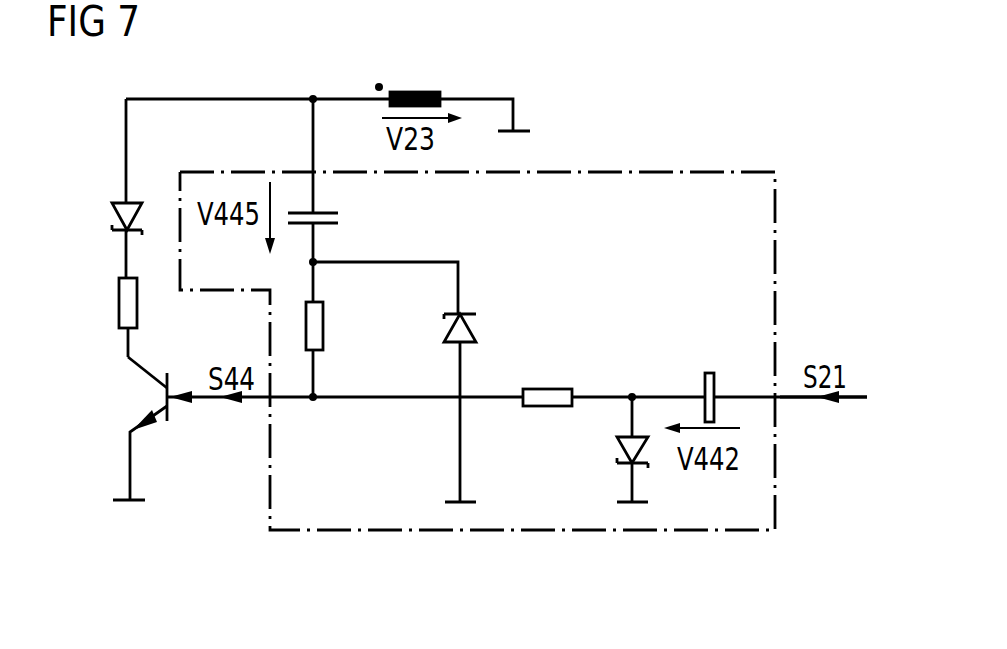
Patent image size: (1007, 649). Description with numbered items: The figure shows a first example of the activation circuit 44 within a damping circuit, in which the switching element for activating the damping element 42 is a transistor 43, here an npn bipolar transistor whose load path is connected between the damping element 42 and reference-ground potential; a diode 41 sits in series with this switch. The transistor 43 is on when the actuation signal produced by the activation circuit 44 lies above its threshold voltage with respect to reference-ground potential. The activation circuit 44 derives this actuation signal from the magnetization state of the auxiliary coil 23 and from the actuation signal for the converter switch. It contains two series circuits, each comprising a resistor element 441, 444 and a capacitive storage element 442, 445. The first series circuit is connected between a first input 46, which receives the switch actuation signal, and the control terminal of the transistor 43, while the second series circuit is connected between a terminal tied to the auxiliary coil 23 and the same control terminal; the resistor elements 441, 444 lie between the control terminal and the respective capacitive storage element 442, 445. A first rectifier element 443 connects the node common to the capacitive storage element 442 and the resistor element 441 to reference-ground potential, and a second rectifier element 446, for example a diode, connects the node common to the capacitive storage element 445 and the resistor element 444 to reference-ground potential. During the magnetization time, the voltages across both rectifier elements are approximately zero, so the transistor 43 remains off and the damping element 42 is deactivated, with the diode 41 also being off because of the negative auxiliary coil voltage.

The auxiliary coil 23 is at (412, 90).
The diode 41 is at (118, 218).
The damping element 42 is at (118, 305).
The transistor 43 is at (162, 392).
The activation circuit 44 is at (560, 532).
The first input 46 is at (797, 400).
The resistor element 441 is at (546, 387).
The capacitive storage element 442 is at (710, 370).
The first rectifier element 443 is at (620, 448).
The resistor element 444 is at (326, 322).
The capacitive storage element 445 is at (338, 220).
The second rectifier element 446 is at (474, 324).